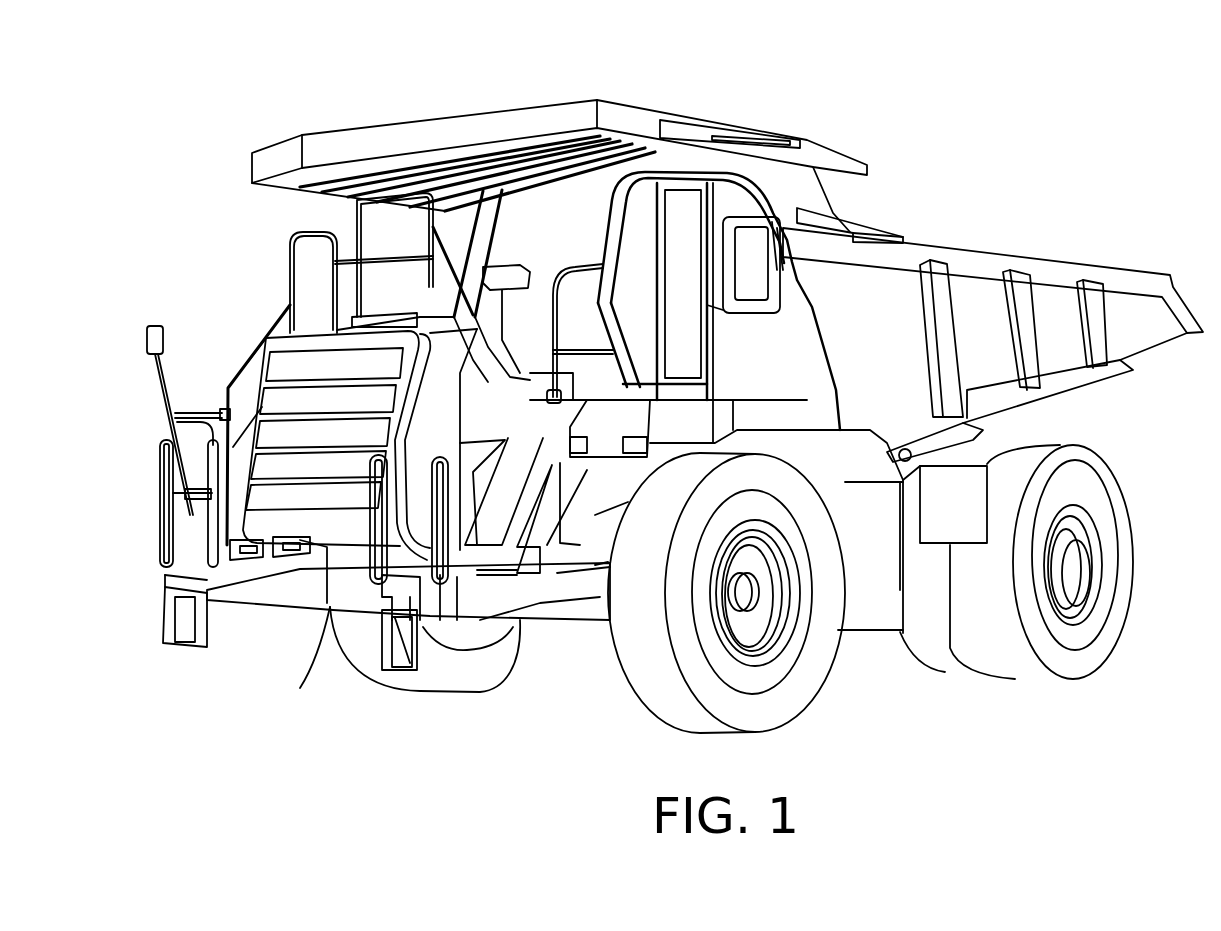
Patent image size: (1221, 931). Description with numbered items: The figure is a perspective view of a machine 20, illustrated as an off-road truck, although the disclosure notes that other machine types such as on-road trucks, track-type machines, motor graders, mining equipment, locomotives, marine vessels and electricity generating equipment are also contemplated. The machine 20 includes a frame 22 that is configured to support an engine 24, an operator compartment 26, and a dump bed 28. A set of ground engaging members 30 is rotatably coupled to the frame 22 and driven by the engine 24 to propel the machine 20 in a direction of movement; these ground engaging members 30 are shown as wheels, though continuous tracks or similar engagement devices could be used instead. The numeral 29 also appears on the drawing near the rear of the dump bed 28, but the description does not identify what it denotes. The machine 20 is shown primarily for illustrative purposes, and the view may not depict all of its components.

The machine 20 is at (268, 114).
The frame 22 is at (355, 590).
The engine 24 is at (333, 532).
The operator compartment 26 is at (690, 217).
The dump bed 28 is at (1055, 275).
The body pivot / hoist bracket 29 is at (965, 432).
The ground engaging members 30 is at (773, 710).